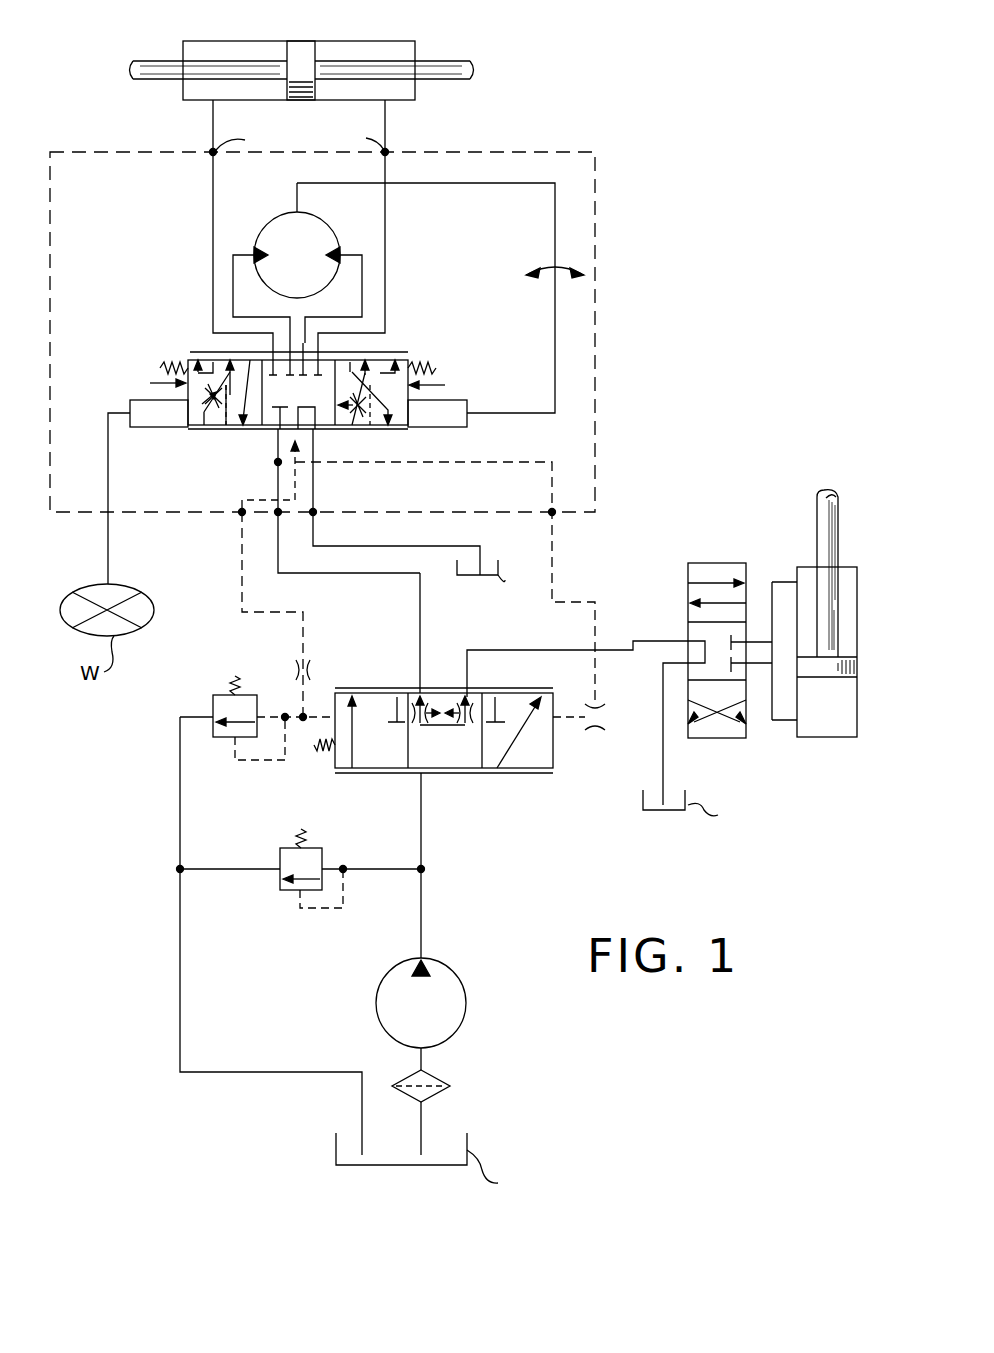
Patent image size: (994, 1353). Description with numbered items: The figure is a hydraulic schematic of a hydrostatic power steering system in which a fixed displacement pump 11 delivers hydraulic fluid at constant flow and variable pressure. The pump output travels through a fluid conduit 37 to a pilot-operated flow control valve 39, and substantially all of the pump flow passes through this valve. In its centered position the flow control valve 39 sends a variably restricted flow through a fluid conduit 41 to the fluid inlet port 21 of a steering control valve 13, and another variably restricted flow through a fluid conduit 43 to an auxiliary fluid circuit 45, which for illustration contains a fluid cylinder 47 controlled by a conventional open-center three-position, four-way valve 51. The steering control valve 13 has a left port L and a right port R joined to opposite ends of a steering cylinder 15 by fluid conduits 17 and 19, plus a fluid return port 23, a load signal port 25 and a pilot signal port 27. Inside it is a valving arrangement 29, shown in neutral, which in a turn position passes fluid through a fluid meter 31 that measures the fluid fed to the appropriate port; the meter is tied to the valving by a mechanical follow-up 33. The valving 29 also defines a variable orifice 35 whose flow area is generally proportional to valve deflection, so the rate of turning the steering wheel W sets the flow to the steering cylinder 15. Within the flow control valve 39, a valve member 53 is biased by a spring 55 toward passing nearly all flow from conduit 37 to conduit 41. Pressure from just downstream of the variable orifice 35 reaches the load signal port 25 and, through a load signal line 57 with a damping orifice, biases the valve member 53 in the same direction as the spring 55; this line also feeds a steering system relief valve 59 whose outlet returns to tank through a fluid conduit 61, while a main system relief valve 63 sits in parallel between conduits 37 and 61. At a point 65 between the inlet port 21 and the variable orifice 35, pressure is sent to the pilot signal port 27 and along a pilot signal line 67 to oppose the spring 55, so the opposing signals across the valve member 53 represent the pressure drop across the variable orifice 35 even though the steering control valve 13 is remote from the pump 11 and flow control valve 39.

The fixed displacement pump 11 is at (476, 990).
The steering control valve 13 is at (626, 240).
The steering cylinder 15 is at (308, 34).
The fluid conduit 17 is at (210, 118).
The fluid conduit 19 is at (390, 118).
The fluid inlet port 21 is at (282, 515).
The fluid return port 23 is at (316, 514).
The load signal port 25 is at (240, 515).
The pilot signal port 27 is at (555, 515).
The valving arrangement 29 is at (414, 354).
The fluid meter 31 is at (318, 228).
The mechanical follow-up 33 is at (553, 216).
The variable orifice 35 is at (200, 405).
The fluid conduit 37 is at (425, 830).
The flow control valve 39 is at (512, 782).
The fluid conduit 41 is at (418, 633).
The fluid conduit 43 is at (552, 649).
The auxiliary fluid circuit 45 is at (724, 540).
The fluid cylinder 47 is at (818, 740).
The three-position, four-way valve 51 is at (716, 740).
The valve member 53 is at (556, 752).
The spring 55 is at (322, 752).
The load signal line 57 is at (288, 614).
The steering system relief valve 59 is at (186, 692).
The fluid conduit 61 is at (178, 806).
The main system relief valve 63 is at (266, 854).
The point 65 is at (275, 463).
The pilot signal line 67 is at (580, 602).